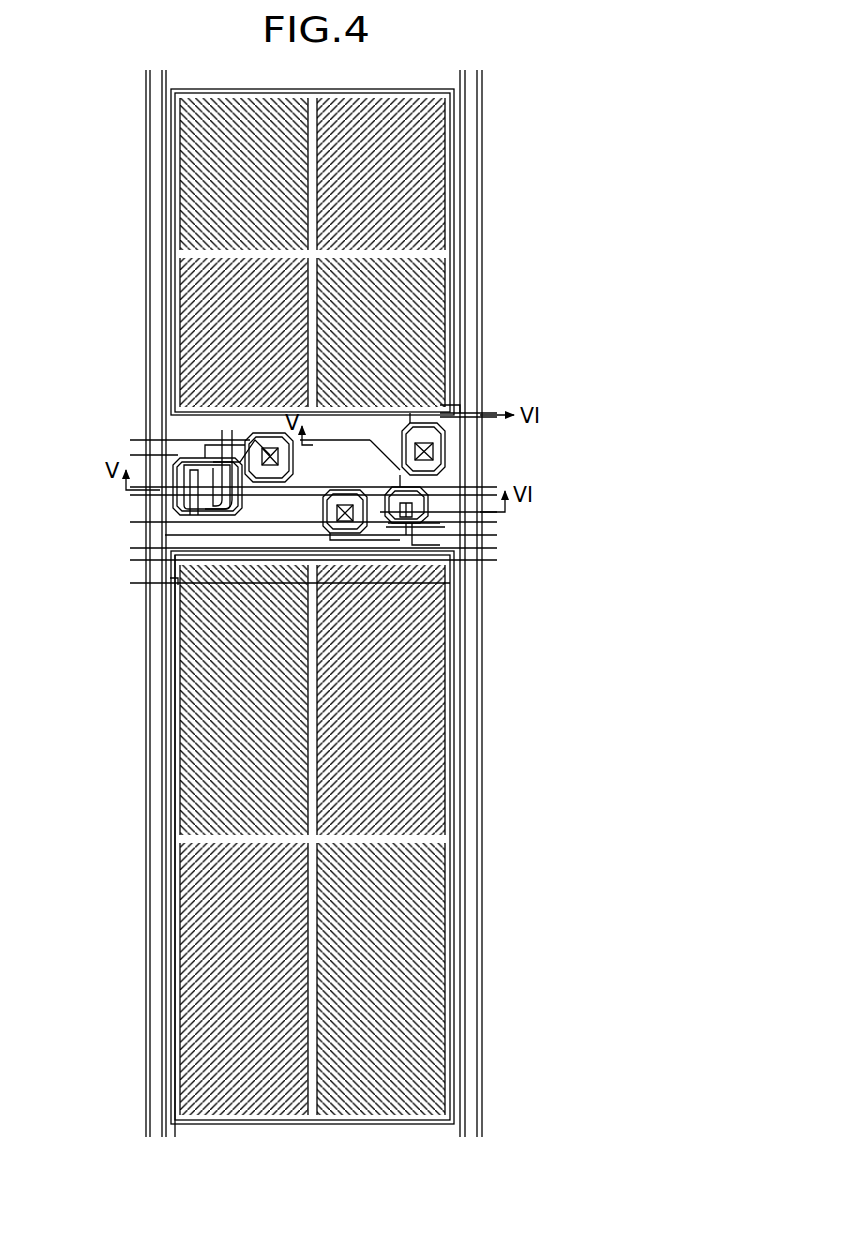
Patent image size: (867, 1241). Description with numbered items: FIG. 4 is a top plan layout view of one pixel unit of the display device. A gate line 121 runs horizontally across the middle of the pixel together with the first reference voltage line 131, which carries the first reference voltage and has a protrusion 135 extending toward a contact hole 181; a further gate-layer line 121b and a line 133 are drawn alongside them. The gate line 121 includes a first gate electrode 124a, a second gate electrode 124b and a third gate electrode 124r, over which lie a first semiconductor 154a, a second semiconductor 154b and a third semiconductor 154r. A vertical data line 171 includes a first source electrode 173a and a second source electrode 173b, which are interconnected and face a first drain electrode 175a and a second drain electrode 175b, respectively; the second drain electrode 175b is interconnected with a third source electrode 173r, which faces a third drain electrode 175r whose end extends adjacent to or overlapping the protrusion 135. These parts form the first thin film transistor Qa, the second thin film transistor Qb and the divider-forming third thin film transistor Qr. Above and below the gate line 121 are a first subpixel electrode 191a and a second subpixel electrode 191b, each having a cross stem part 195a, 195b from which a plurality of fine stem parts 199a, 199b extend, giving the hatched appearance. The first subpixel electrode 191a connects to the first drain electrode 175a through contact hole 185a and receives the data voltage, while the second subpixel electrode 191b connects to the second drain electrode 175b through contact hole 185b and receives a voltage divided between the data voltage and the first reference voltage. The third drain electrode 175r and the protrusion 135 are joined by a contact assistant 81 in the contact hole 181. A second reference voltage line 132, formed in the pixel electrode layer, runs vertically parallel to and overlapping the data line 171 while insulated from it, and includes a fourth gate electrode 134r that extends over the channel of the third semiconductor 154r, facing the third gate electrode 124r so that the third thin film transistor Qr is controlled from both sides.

The data line 171 is at (160, 181).
The storage electrode line 133 is at (162, 218).
The first reference voltage line 131 is at (162, 405).
The second reference voltage line 132 is at (466, 296).
The first subpixel electrode 191a is at (180, 258).
The second subpixel electrode 191b is at (176, 777).
The fine stem parts 199a is at (395, 185).
The fine stem parts 199b is at (400, 905).
The cross stem part 195a is at (405, 232).
The cross stem part 195b is at (400, 855).
The gate line 121 is at (133, 522).
The second gate line 121b is at (133, 583).
The first gate electrode 124a is at (240, 458).
The second gate electrode 124b is at (180, 444).
The third gate electrode 124r is at (430, 486).
The first semiconductor 154a is at (215, 448).
The second semiconductor 154b is at (180, 528).
The third semiconductor 154r is at (432, 522).
The fourth gate electrode 134r is at (430, 515).
The first source electrode 173a is at (176, 588).
The second source electrode 173b is at (172, 458).
The third source electrode 173r is at (415, 532).
The first drain electrode 175a is at (246, 440).
The second drain electrode 175b is at (176, 542).
The third drain electrode 175r is at (430, 505).
The contact hole 185a is at (268, 446).
The contact hole 185b is at (346, 504).
The contact hole 181 is at (482, 458).
The protrusion 135 is at (432, 441).
The contact assistant 81 is at (440, 411).
The first thin film transistor Qa is at (250, 498).
The second thin film transistor Qb is at (190, 446).
The third thin film transistor Qr is at (392, 545).